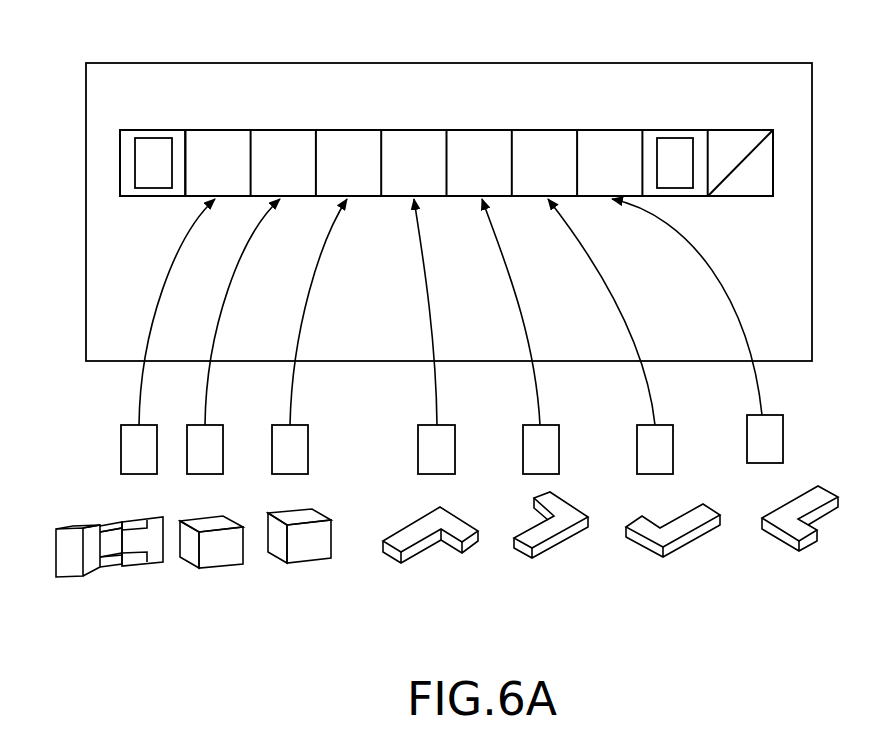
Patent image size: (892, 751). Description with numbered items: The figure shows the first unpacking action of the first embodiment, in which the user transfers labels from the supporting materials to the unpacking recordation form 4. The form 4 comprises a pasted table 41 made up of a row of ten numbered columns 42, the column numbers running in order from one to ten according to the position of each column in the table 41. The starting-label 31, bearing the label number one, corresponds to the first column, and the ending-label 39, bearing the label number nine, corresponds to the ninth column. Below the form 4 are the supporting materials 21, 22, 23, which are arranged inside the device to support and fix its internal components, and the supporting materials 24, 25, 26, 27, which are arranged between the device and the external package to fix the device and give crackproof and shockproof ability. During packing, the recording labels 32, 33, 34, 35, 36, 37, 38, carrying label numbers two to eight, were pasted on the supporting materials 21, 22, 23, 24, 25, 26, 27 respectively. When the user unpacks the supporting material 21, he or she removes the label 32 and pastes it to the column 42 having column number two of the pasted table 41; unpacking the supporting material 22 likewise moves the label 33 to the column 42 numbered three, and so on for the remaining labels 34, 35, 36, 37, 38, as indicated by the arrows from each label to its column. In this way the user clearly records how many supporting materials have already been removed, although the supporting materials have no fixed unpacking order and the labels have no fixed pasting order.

The unpacking recordation form 4 is at (538, 88).
The starting-label 31 is at (143, 178).
The column 42 is at (128, 156).
The ending-label 39 is at (670, 145).
The pasted table 41 is at (606, 122).
The recording label 32 is at (127, 433).
The recording label 33 is at (217, 432).
The recording label 34 is at (302, 432).
The recording label 35 is at (428, 438).
The recording label 36 is at (532, 433).
The recording label 37 is at (642, 430).
The recording label 38 is at (757, 425).
The supporting material 21 is at (123, 548).
The supporting material 22 is at (220, 548).
The supporting material 23 is at (307, 548).
The supporting material 24 is at (420, 547).
The supporting material 25 is at (555, 540).
The supporting material 26 is at (684, 538).
The supporting material 27 is at (808, 540).